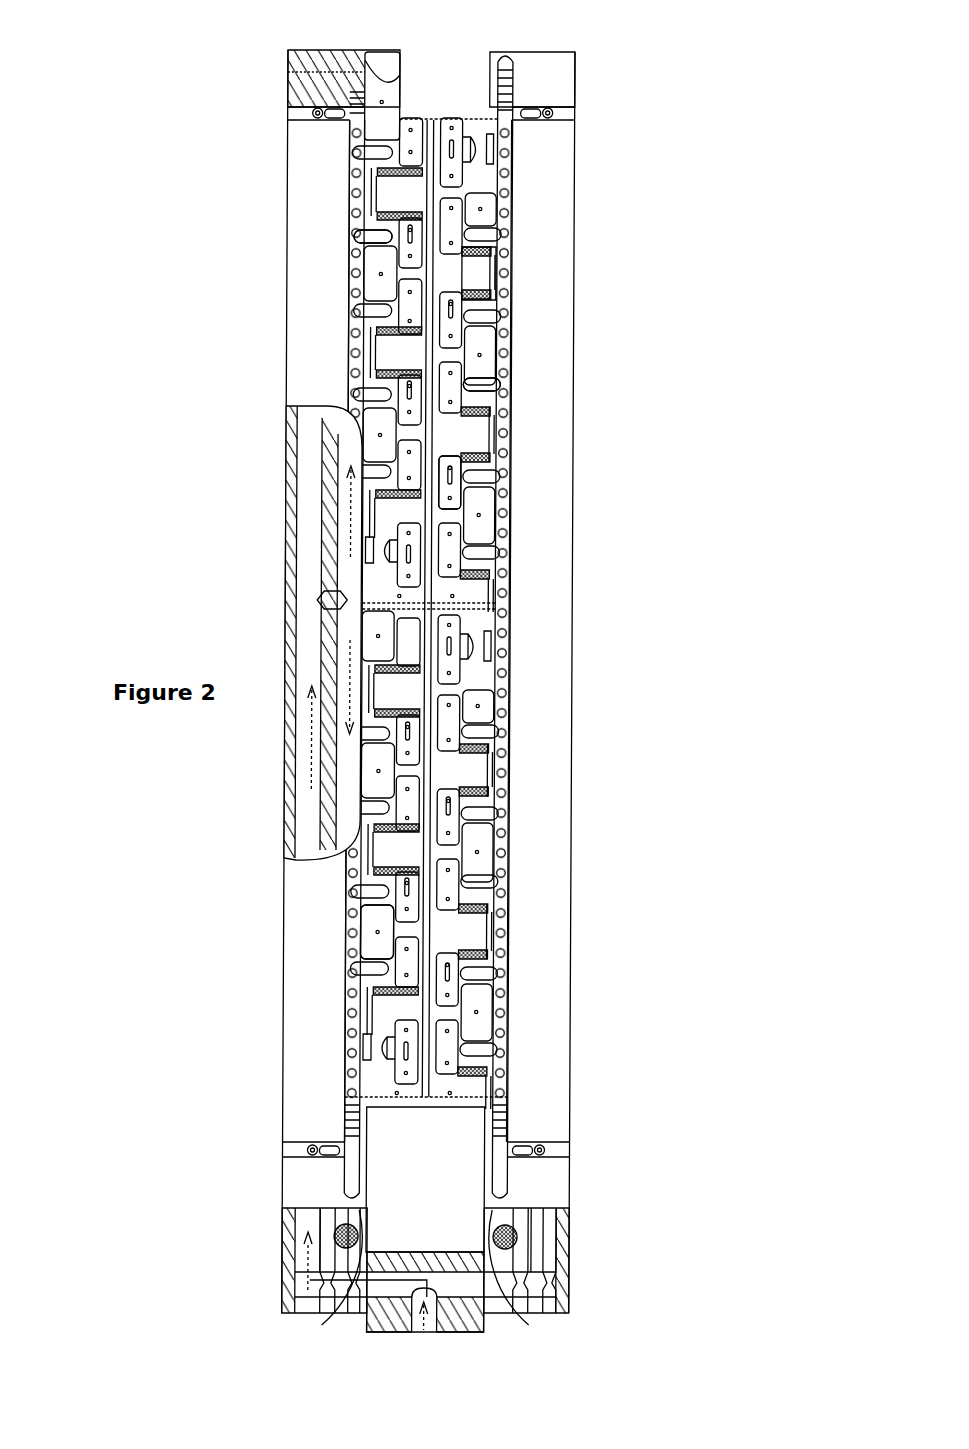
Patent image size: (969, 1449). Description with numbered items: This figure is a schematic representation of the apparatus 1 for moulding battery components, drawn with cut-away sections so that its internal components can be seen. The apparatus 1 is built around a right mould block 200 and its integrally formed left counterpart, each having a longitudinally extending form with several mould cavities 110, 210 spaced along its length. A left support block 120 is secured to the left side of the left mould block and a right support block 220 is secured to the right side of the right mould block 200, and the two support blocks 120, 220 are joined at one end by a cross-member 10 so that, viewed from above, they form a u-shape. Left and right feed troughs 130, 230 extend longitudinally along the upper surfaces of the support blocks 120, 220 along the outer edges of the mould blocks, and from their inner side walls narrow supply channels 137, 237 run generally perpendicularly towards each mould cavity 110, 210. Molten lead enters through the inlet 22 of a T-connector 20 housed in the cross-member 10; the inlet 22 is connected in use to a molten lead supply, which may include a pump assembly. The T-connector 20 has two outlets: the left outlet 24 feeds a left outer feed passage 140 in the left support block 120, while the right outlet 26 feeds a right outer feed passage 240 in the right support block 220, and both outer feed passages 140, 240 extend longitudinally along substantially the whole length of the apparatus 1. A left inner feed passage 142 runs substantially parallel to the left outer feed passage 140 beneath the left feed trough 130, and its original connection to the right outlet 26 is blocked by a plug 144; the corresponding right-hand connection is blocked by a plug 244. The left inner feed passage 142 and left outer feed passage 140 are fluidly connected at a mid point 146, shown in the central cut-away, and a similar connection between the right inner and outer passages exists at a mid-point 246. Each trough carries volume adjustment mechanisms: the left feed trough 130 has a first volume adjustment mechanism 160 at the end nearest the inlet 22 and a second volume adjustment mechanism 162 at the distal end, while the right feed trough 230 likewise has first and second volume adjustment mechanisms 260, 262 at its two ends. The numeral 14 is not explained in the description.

The apparatus 1 is at (100, 300).
The cross-member 10 is at (551, 1250).
The housing portion 14 is at (346, 1215).
The T-connector 20 is at (455, 1293).
The inlet 22 is at (438, 1333).
The left outlet 24 is at (386, 1287).
The right outlet 26 is at (490, 1316).
The mould cavities 110 is at (410, 965).
The left support block 120 is at (287, 348).
The left feed trough 130 is at (354, 1012).
The supply channels 137 is at (376, 237).
The left outer feed passage 140 is at (321, 78).
The left inner feed passage 142 is at (356, 75).
The plug 144 is at (356, 1240).
The mid point 146 is at (332, 600).
The first volume adjustment mechanism 160 is at (325, 1132).
The second volume adjustment mechanism 162 is at (320, 108).
The right mould block 200 is at (473, 276).
The mould cavities 210 is at (440, 627).
The right support block 220 is at (579, 350).
The right feed trough 230 is at (512, 935).
The supply channels 237 is at (497, 400).
The right outer feed passage 240 is at (551, 1250).
The plug 244 is at (464, 1247).
The mid-point 246 is at (551, 593).
The first volume adjustment mechanism 260 is at (530, 1130).
The second volume adjustment mechanism 262 is at (558, 100).